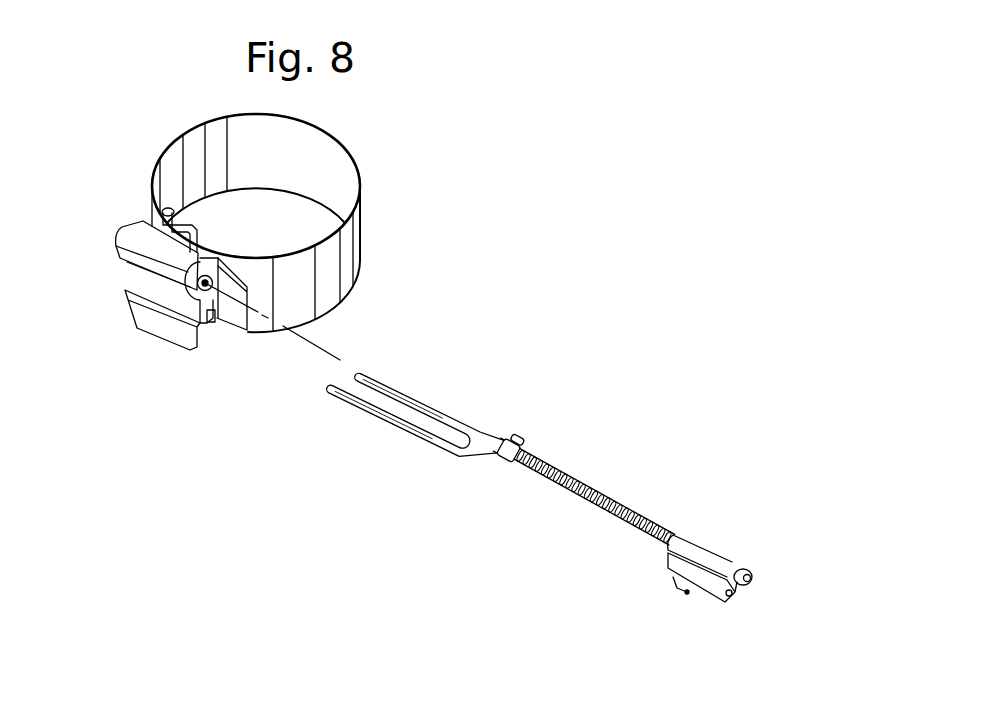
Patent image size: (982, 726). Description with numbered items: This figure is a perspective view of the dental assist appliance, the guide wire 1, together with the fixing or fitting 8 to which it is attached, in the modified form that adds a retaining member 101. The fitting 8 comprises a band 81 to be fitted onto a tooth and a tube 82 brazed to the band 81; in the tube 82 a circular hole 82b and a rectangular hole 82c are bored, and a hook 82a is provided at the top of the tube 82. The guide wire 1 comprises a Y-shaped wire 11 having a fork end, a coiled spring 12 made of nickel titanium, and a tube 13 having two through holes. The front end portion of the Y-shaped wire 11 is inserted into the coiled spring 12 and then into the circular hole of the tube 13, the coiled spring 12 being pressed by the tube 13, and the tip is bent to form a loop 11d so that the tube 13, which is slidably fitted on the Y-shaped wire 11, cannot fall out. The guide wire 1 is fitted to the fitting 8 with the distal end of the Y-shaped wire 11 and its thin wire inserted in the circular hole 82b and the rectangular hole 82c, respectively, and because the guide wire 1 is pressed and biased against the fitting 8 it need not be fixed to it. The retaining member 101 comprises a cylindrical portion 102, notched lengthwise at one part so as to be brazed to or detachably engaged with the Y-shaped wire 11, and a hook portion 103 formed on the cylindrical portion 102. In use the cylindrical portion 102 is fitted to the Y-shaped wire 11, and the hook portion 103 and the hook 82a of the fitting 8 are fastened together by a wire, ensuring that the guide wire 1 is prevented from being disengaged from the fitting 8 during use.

The fitting 8 is at (343, 127).
The band 81 is at (177, 141).
The tube 82 is at (127, 293).
The hook 82a is at (176, 207).
The circular hole 82b is at (207, 286).
The rectangular hole 82c is at (212, 321).
The guide wire 1 is at (598, 463).
The Y-shaped wire 11 is at (447, 413).
The retaining member 101 is at (510, 466).
The cylindrical portion 102 is at (502, 457).
The hook portion 103 is at (516, 432).
The coiled spring 12 is at (617, 500).
The tube 13 is at (693, 540).
The loop 11d is at (742, 582).